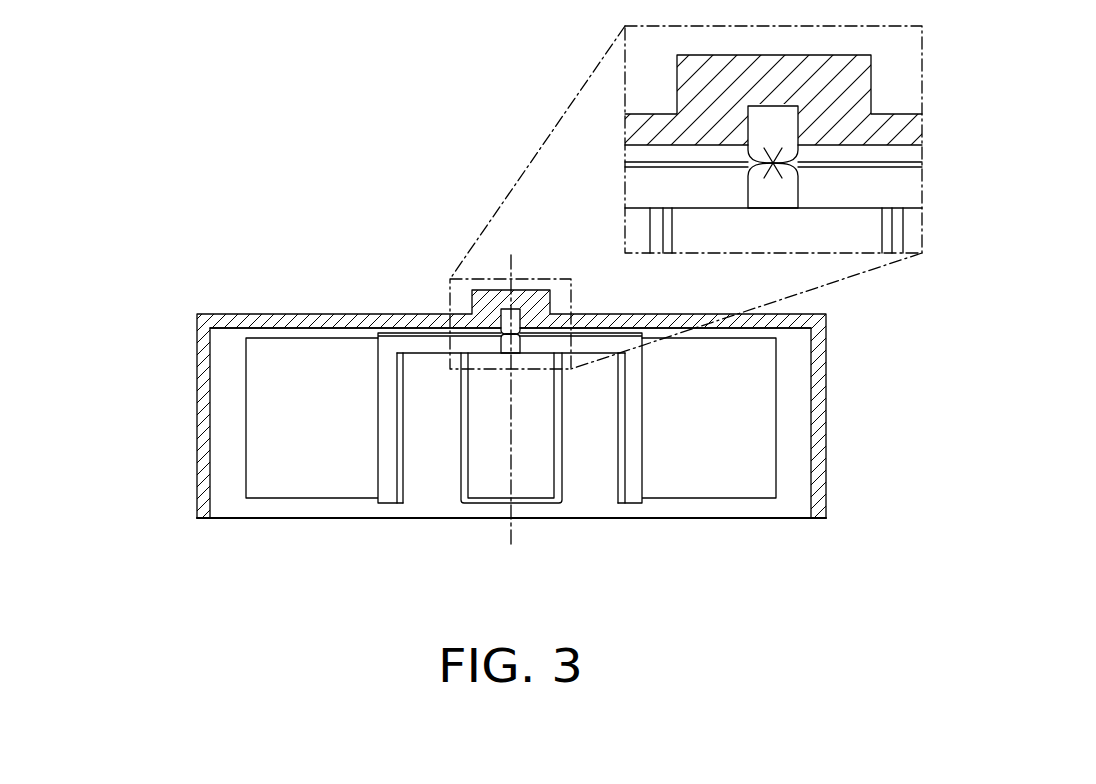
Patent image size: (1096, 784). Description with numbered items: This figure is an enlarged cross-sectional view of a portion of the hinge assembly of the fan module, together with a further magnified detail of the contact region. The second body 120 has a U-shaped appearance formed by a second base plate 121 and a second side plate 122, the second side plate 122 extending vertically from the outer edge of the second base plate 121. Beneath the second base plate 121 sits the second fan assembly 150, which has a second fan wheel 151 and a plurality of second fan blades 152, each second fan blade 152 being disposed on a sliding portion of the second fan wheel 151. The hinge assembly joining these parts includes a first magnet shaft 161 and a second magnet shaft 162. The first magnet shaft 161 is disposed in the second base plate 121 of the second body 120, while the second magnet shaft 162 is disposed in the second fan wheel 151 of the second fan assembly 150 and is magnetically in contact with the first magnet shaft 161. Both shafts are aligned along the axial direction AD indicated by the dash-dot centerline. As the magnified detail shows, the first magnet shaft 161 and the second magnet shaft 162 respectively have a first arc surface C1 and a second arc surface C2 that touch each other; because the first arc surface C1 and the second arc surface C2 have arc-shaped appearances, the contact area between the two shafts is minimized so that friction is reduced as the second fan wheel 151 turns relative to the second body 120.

The second body 120 is at (122, 287).
The second base plate 121 is at (240, 318).
The second side plate 122 is at (205, 346).
The second fan assembly 150 is at (673, 567).
The second fan wheel 151 is at (585, 342).
The second fan blade 152 is at (665, 490).
The first magnet shaft 161 is at (504, 310).
The second magnet shaft 162 is at (507, 346).
The axial direction AD is at (511, 384).
The first arc surface C1 is at (773, 160).
The second arc surface C2 is at (773, 165).